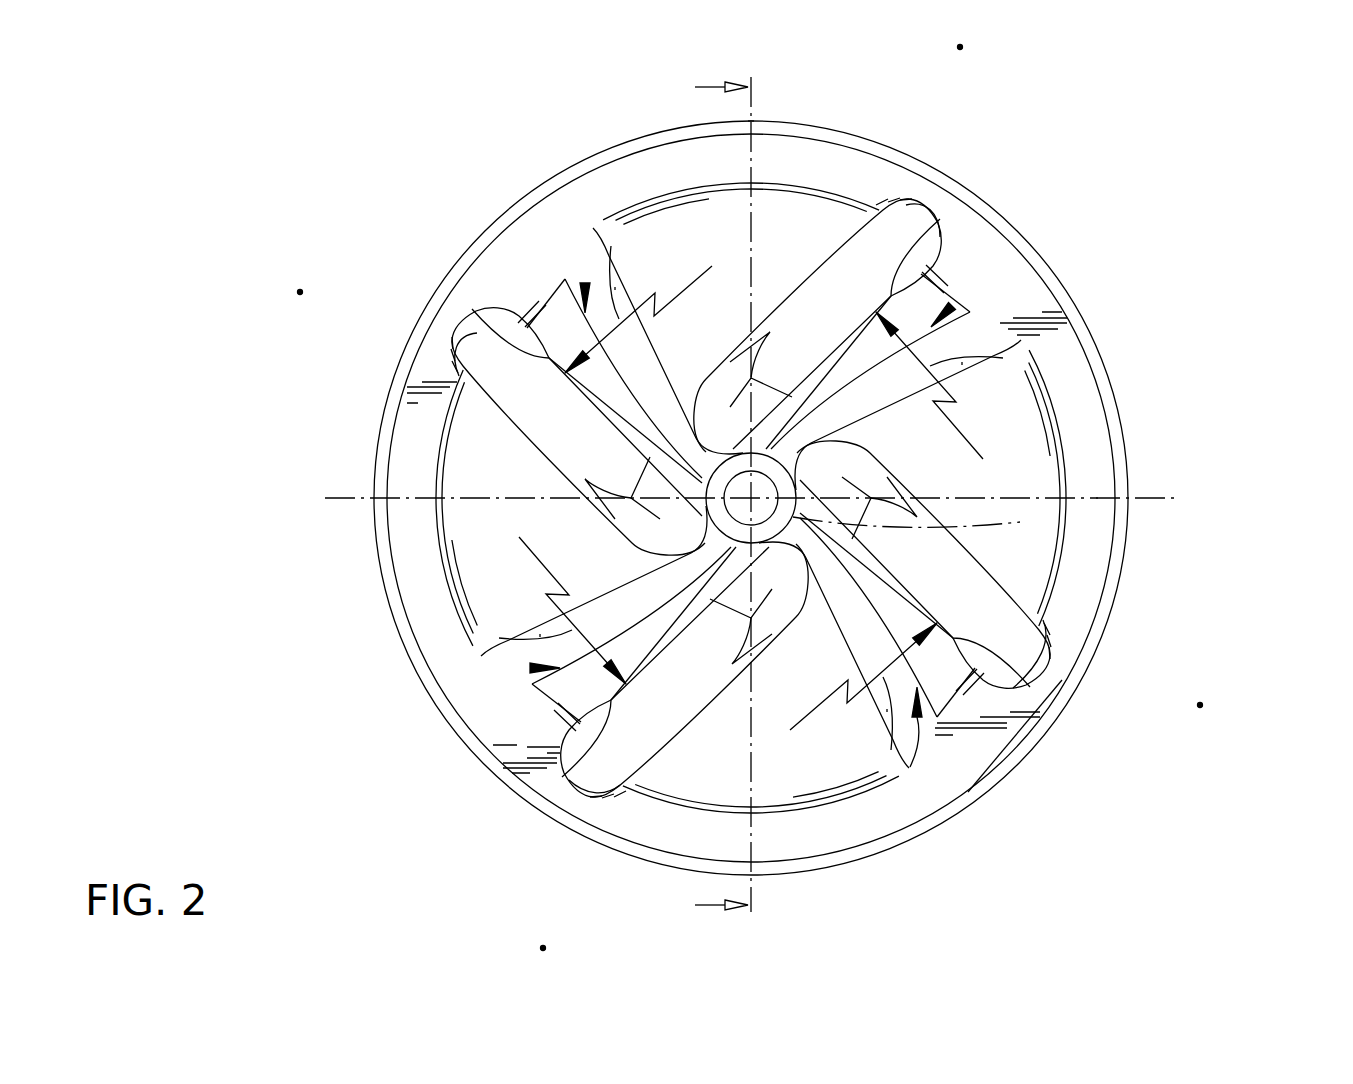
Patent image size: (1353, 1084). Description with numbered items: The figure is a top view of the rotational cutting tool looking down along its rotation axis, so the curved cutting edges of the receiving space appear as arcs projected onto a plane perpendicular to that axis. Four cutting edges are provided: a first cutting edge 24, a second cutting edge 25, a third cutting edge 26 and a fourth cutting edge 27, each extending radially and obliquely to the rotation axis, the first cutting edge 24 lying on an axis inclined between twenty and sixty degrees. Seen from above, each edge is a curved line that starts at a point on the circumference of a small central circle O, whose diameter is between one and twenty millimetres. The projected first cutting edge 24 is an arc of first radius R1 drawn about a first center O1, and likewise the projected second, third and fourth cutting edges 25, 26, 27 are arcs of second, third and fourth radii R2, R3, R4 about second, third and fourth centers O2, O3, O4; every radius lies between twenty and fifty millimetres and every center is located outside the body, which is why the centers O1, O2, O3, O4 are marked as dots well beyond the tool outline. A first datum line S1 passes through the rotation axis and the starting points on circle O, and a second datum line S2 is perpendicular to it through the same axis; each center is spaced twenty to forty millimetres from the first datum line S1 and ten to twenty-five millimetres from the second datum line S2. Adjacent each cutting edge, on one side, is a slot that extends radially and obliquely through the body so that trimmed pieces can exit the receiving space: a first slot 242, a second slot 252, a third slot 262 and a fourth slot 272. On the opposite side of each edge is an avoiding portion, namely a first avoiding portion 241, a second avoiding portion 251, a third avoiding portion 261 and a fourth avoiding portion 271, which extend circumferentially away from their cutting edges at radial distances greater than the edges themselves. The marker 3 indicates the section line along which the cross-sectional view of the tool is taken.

The section line 3- 3 is at (721, 497).
The first cutting edge 24 is at (942, 235).
The first avoiding portion 241 is at (952, 306).
The first slot 242 is at (937, 228).
The second cutting edge 25 is at (567, 747).
The second avoiding portion 251 is at (530, 668).
The second slot 252 is at (600, 772).
The third cutting edge 26 is at (1043, 710).
The third avoiding portion 261 is at (917, 717).
The third slot 262 is at (1013, 603).
The fourth cutting edge 27 is at (503, 308).
The fourth avoiding portion 271 is at (585, 283).
The fourth slot 272 is at (477, 383).
The first radius R1 is at (962, 362).
The second radius R2 is at (540, 634).
The third radius R3 is at (887, 709).
The fourth radius R4 is at (615, 287).
The first datum line S1 is at (752, 143).
The second datum line S2 is at (1097, 497).
The circle O is at (1020, 522).
The first center O1 is at (1203, 705).
The second center O2 is at (298, 292).
The third center O3 is at (541, 948).
The fourth center O4 is at (963, 47).